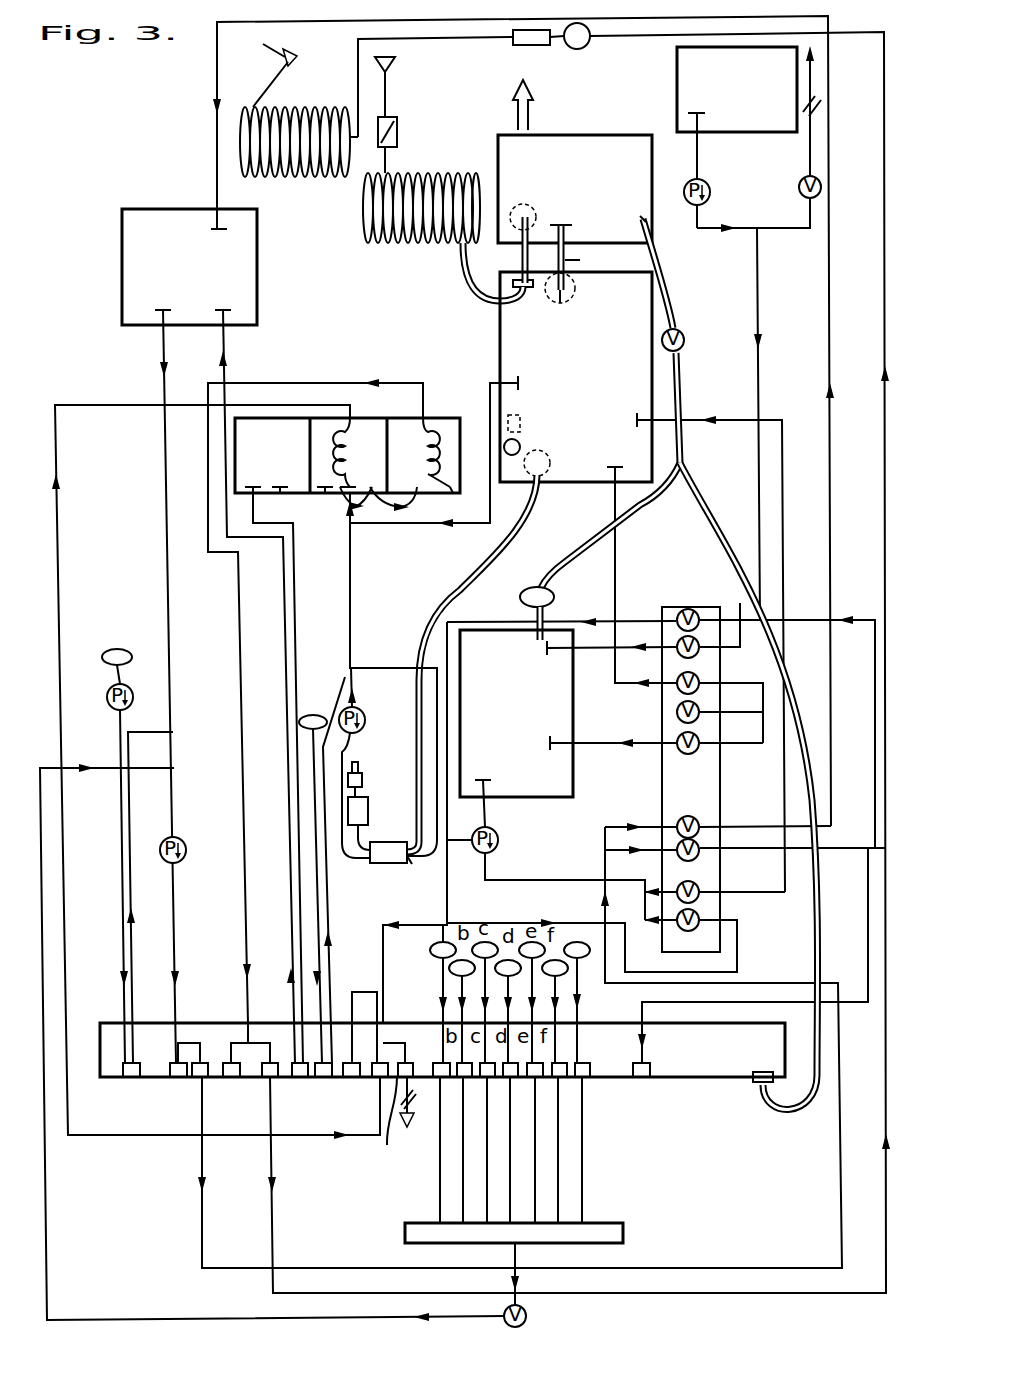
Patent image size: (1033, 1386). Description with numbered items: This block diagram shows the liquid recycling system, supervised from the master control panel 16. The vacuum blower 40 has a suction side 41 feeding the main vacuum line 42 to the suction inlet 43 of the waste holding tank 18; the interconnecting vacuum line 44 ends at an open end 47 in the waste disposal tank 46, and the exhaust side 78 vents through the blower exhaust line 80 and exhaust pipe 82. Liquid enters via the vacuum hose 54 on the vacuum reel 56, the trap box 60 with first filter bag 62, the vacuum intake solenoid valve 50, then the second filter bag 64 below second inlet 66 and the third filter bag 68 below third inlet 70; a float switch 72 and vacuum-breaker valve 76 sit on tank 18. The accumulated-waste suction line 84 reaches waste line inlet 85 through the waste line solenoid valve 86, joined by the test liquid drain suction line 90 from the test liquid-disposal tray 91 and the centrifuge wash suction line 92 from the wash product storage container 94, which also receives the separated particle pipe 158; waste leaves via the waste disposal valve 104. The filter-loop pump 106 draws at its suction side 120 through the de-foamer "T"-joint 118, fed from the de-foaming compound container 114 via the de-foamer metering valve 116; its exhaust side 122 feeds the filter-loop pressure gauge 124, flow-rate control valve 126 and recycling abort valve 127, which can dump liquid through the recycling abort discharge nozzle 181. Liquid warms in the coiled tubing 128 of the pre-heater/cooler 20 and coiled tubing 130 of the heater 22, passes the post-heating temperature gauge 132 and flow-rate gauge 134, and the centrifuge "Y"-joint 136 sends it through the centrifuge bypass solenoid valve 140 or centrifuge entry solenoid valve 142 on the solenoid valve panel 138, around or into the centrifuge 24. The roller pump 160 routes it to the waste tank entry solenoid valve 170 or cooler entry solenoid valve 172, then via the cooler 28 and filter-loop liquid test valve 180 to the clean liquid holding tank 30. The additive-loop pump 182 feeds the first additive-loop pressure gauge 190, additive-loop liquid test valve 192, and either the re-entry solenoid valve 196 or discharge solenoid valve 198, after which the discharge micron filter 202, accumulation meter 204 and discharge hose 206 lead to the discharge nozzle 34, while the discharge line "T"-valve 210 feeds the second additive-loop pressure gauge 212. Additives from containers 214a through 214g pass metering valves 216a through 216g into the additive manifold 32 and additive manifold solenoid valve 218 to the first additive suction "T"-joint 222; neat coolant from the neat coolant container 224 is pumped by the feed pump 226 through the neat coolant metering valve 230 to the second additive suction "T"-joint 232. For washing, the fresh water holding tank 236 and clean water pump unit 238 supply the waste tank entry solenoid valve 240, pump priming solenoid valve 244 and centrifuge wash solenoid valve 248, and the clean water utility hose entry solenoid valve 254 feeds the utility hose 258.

The master control panel 16 is at (163, 1052).
The waste liquid holding tank 18 is at (587, 375).
The preheater/cooler 20 is at (331, 498).
The heater 22 is at (432, 423).
The centrifuge 24 is at (524, 697).
The cooler 28 is at (282, 468).
The clean liquid holding tank 30 is at (192, 275).
The additive manifold 32 is at (608, 1223).
The discharge nozzle 34 is at (266, 69).
The vacuum blower 40 is at (398, 861).
The suction side 41 is at (412, 864).
The main vacuum line 42 is at (502, 553).
The suction inlet 43 is at (546, 457).
The interconnecting vacuum line 44 is at (586, 261).
The waste disposal tank 46 is at (584, 178).
The open end 47 is at (561, 222).
The vacuum intake solenoid valve 50 is at (393, 60).
The vacuum hose 54 is at (421, 173).
The vacuum reel 56 is at (362, 215).
The fine filter screen trap box 60 is at (384, 146).
The first disposable fine filter screen bag 62 is at (398, 120).
The second disposable fine filter screen bag 64 is at (522, 205).
The second recycling liquid inlet 66 is at (520, 260).
The third disposable fine filter screen bag 68 is at (560, 303).
The third recycling liquid inlet 70 is at (576, 286).
The float switch 72 is at (519, 414).
The vacuum-breaker valve 76 is at (520, 442).
The exhaust side 78 is at (364, 856).
The blower exhaust line 80 is at (369, 820).
The exhaust pipe 82 is at (363, 778).
The accumulated-waste suction line 84 is at (663, 274).
The waste line inlet 85 is at (641, 217).
The waste line solenoid valve 86 is at (684, 335).
The test liquid drain suction line 90 is at (820, 935).
The test liquid-disposal tray 91 is at (755, 1085).
The centrifuge wash suction line 92 is at (646, 517).
The centrifuge wash product storage container 94 is at (520, 597).
The waste disposal valve 104 is at (534, 92).
The filter-loop pump 106 is at (366, 724).
The de-foaming compound container 114 is at (313, 714).
The de-foamer metering valve 116 is at (325, 1078).
The de-foamer T-joint 118 is at (357, 688).
The suction side 120 is at (379, 687).
The exhaust side 122 is at (355, 738).
The filter-loop pressure gauge 124 is at (352, 1078).
The filter-loop flow-rate control valve 126 is at (375, 1078).
The recycling abort valve 127 is at (379, 1121).
The coiled tubing 128 is at (352, 430).
The coiled tubing 130 is at (450, 491).
The post-heating temperature gauge 132 is at (231, 1078).
The transparent glass flow-rate gauge 134 is at (264, 1078).
The centrifuge Y-joint 136 is at (740, 612).
The solenoid valve panel 138 is at (707, 795).
The centrifuge bypass solenoid valve 140 is at (685, 608).
The centrifuge entry solenoid valve 142 is at (676, 643).
The separated particle pipe 158 is at (548, 620).
The roller pump 160 is at (497, 833).
The waste liquid holding tank entry solenoid valve 170 is at (701, 888).
The cooler entry solenoid valve 172 is at (701, 918).
The filter-loop liquid test valve 180 is at (300, 1078).
The recycling abort discharge nozzle 181 is at (414, 1120).
The additive-loop pump 182 is at (183, 841).
The first additive-loop pressure gauge 190 is at (176, 1078).
The additive-loop liquid test valve 192 is at (191, 1078).
The clean liquid holding tank re-entry solenoid valve 196 is at (676, 823).
The discharge solenoid valve 198 is at (701, 848).
The disposable discharge micron filter 202 is at (586, 46).
The accumulation meter 204 is at (531, 45).
The discharge hose 206 is at (295, 107).
The discharge line T-valve 210 is at (868, 848).
The second additive-loop pressure gauge 212 is at (642, 1078).
The additive compound container 214a is at (436, 950).
The additive compound container 214g is at (591, 939).
The additive metering valve 216a is at (425, 1060).
The additive metering valve 216g is at (588, 1062).
The additive manifold solenoid valve 218 is at (527, 1316).
The first additive suction T-joint 222 is at (174, 770).
The neat coolant container 224 is at (117, 648).
The neat coolant feed pump 226 is at (107, 697).
The neat coolant metering valve 230 is at (130, 1078).
The second additive suction T-joint 232 is at (173, 732).
The fresh water holding tank 236 is at (753, 98).
The clean water pump unit 238 is at (705, 182).
The waste liquid holding tank entry solenoid valve 240 is at (700, 680).
The pump priming solenoid valve 244 is at (676, 709).
The centrifuge wash solenoid valve 248 is at (676, 741).
The clean water utility hose entry solenoid valve 254 is at (800, 190).
The utility hose 258 is at (816, 92).